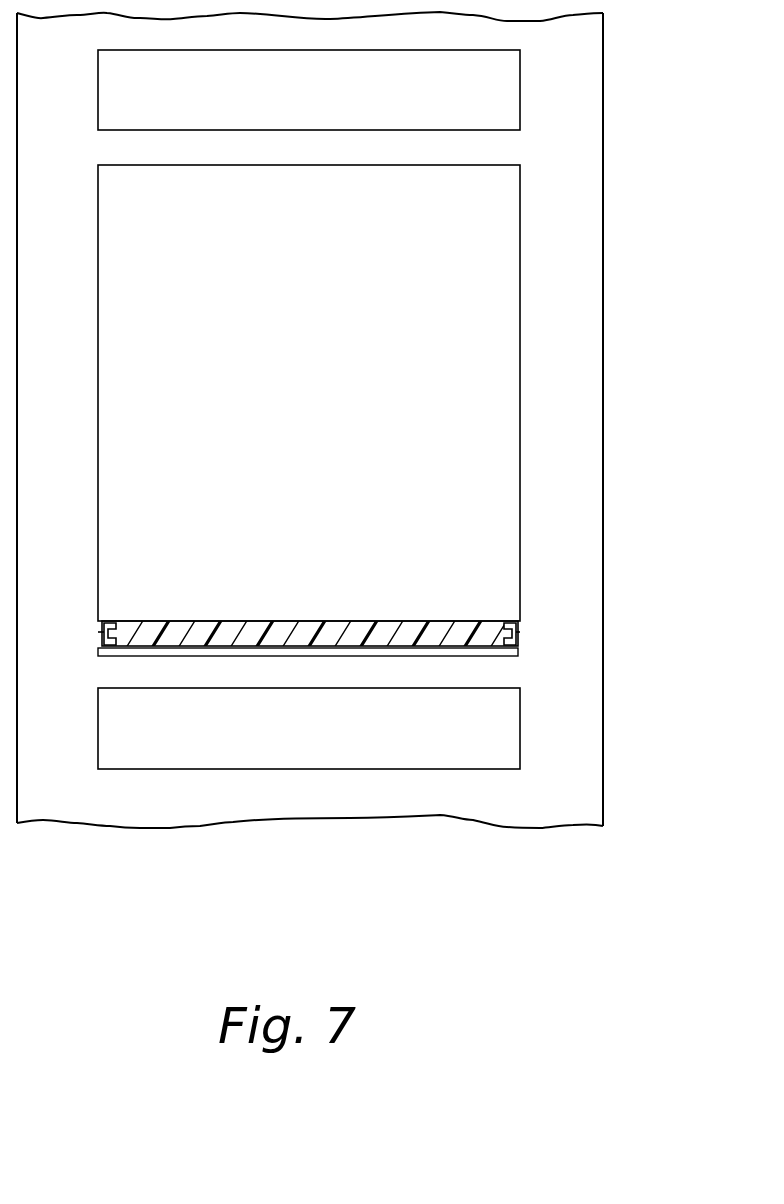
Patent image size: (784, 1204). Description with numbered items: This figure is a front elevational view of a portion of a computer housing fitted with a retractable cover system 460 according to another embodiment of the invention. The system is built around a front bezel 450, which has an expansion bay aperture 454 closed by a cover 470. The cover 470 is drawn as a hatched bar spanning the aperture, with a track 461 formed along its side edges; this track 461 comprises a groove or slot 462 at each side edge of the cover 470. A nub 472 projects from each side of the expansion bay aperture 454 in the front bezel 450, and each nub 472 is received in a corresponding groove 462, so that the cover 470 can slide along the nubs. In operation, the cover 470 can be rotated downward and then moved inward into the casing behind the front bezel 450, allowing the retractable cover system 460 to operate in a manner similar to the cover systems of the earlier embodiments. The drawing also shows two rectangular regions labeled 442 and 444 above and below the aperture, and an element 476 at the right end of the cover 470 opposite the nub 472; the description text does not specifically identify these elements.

The upper electrode plate 442 is at (520, 80).
The lower electrode plate 444 is at (520, 725).
The front bezel 450 is at (588, 287).
The expansion bay aperture 454 is at (522, 360).
The retractable cover system 460 is at (310, 635).
The track 461 is at (512, 650).
The groove or slot 462 is at (104, 648).
The cover 470 is at (180, 628).
The nub 472 is at (100, 632).
The second end terminal 476 is at (515, 632).